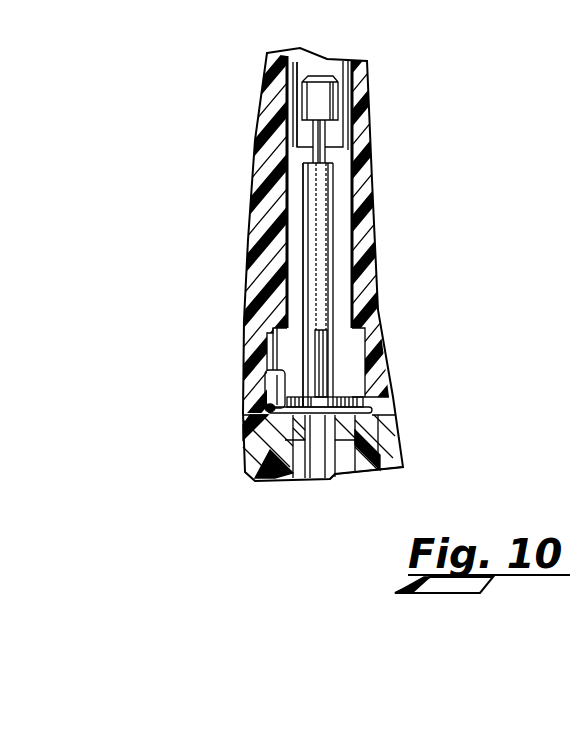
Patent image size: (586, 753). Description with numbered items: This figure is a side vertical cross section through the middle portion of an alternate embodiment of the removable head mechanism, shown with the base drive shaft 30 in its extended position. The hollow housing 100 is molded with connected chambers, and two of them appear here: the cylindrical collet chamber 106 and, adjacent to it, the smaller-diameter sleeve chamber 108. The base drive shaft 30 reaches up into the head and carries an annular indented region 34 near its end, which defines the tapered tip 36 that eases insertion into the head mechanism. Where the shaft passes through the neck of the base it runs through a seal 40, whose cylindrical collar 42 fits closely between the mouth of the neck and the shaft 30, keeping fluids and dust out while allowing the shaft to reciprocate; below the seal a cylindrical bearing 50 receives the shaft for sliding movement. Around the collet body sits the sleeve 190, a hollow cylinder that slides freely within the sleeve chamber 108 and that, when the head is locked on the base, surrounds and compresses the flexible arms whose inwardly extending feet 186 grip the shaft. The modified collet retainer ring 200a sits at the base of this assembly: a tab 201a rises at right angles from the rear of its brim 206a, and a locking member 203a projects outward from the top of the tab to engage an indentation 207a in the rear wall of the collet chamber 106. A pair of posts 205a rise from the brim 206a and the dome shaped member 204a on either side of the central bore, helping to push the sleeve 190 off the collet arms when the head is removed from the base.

The hollow housing 100 is at (253, 200).
The sleeve chamber 108 is at (293, 252).
The tip 36 is at (283, 73).
The annular indented region 34 is at (345, 152).
The sleeve 190 is at (347, 107).
The feet 186 is at (312, 104).
The base drive shaft 30 is at (330, 228).
The posts 205a is at (323, 330).
The collet chamber 106 is at (352, 330).
The dome shaped member 204a is at (350, 397).
The collet retainer ring 200a is at (372, 410).
The locking member 203a is at (270, 343).
The indentation 207a is at (272, 370).
The tab 201a is at (272, 392).
The brim 206a is at (272, 407).
The seal 40 is at (380, 440).
The cylindrical collar 42 is at (355, 425).
The cylindrical bearing 50 is at (348, 462).